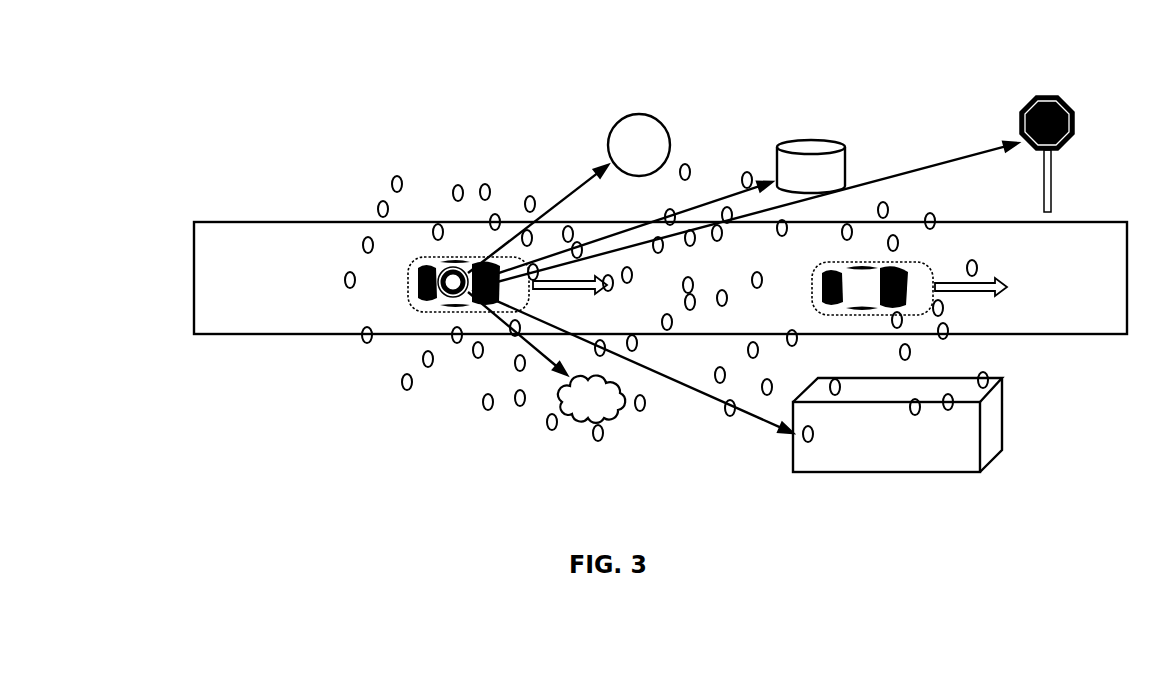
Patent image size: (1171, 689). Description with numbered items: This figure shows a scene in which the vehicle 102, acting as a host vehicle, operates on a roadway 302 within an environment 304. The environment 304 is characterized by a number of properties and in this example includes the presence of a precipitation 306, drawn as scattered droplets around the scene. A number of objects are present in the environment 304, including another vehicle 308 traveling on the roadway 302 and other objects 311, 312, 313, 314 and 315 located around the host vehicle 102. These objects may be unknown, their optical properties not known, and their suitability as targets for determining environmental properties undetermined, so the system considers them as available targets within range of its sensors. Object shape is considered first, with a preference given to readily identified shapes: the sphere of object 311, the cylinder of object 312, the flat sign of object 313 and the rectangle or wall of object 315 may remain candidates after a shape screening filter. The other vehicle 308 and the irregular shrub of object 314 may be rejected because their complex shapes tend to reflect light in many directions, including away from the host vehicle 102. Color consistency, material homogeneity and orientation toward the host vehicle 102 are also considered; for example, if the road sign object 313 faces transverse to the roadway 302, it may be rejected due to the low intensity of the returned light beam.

The vehicle 102 is at (388, 282).
The roadway 302 is at (271, 272).
The environment 304 is at (837, 64).
The precipitation 306 is at (478, 171).
The other vehicle 308 is at (926, 263).
The object (sphere) 311 is at (653, 158).
The object (cylinder) 312 is at (825, 177).
The object (flat sign) 313 is at (1072, 104).
The object (irregular shrub) 314 is at (605, 410).
The object (rectangle/wall) 315 is at (899, 446).